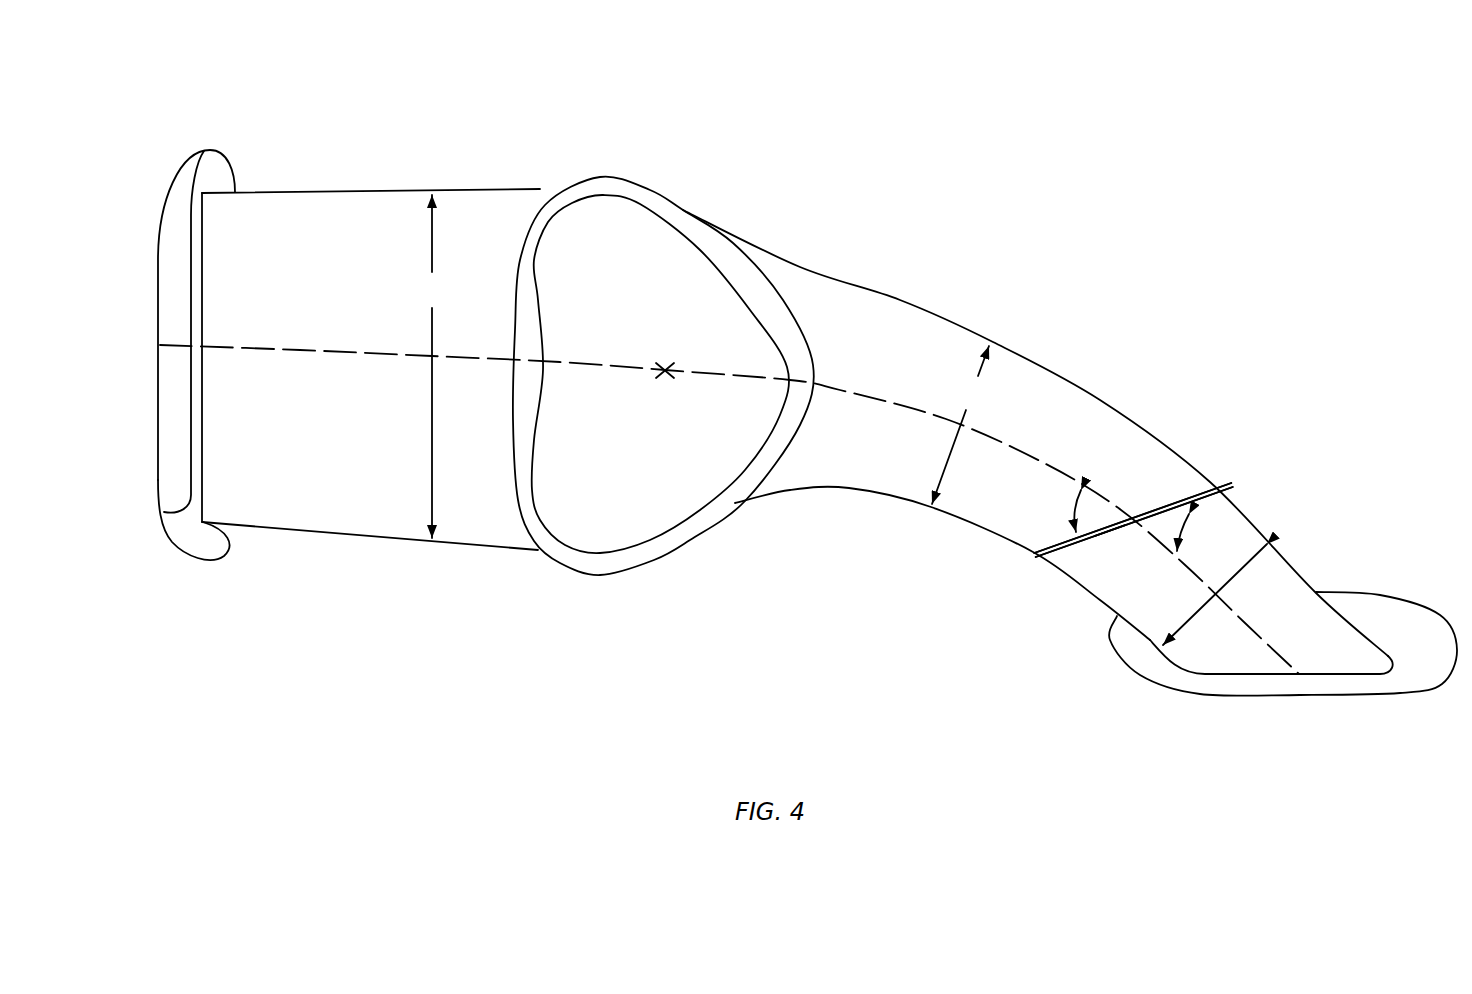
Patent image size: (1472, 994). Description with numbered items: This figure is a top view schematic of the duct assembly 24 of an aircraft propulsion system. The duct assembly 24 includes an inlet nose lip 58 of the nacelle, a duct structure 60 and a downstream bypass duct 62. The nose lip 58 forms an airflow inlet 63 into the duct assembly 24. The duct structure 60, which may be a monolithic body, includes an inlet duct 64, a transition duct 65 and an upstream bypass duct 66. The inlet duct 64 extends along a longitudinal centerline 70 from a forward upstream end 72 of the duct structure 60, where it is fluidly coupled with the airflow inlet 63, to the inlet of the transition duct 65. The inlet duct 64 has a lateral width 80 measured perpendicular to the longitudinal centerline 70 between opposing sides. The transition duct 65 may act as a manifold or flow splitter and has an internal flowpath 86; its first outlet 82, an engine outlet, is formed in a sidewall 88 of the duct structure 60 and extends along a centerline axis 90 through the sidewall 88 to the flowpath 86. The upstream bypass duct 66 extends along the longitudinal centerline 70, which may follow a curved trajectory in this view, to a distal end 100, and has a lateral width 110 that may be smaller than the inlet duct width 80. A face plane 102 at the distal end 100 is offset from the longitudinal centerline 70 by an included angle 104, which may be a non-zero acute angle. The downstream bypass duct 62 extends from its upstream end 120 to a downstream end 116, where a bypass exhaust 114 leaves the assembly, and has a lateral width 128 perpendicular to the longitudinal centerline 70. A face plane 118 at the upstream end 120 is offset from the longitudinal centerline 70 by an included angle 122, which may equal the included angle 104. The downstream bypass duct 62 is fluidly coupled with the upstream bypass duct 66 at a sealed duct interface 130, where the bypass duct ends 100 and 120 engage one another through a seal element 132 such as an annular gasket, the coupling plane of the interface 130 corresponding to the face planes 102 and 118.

The duct assembly 24 is at (1150, 216).
The inlet nose lip 58 is at (228, 132).
The duct structure 60 is at (443, 142).
The downstream bypass duct 62 is at (1338, 498).
The airflow inlet 63 is at (158, 283).
The inlet duct 64 is at (368, 545).
The transition duct 65 is at (593, 583).
The upstream bypass duct 66 is at (826, 495).
The longitudinal centerline 70 is at (270, 356).
The upstream end 72 is at (164, 512).
The lateral width 80 is at (432, 366).
The first outlet 82 is at (636, 201).
The internal flowpath 86 is at (646, 323).
The sidewall 88 is at (515, 185).
The centerline axis 90 is at (664, 381).
The distal end 100 is at (1063, 568).
The face plane 102 is at (1132, 518).
The included angle 104 is at (1071, 511).
The lateral width 110 is at (965, 425).
The bypass exhaust 114 is at (1276, 698).
The downstream end 116 is at (1377, 698).
The face plane 118 is at (1188, 494).
The upstream end 120 is at (1132, 518).
The included angle 122 is at (1196, 530).
The lateral width 128 is at (1244, 578).
The duct interface 130 is at (1234, 485).
The seal element 132 is at (1108, 533).